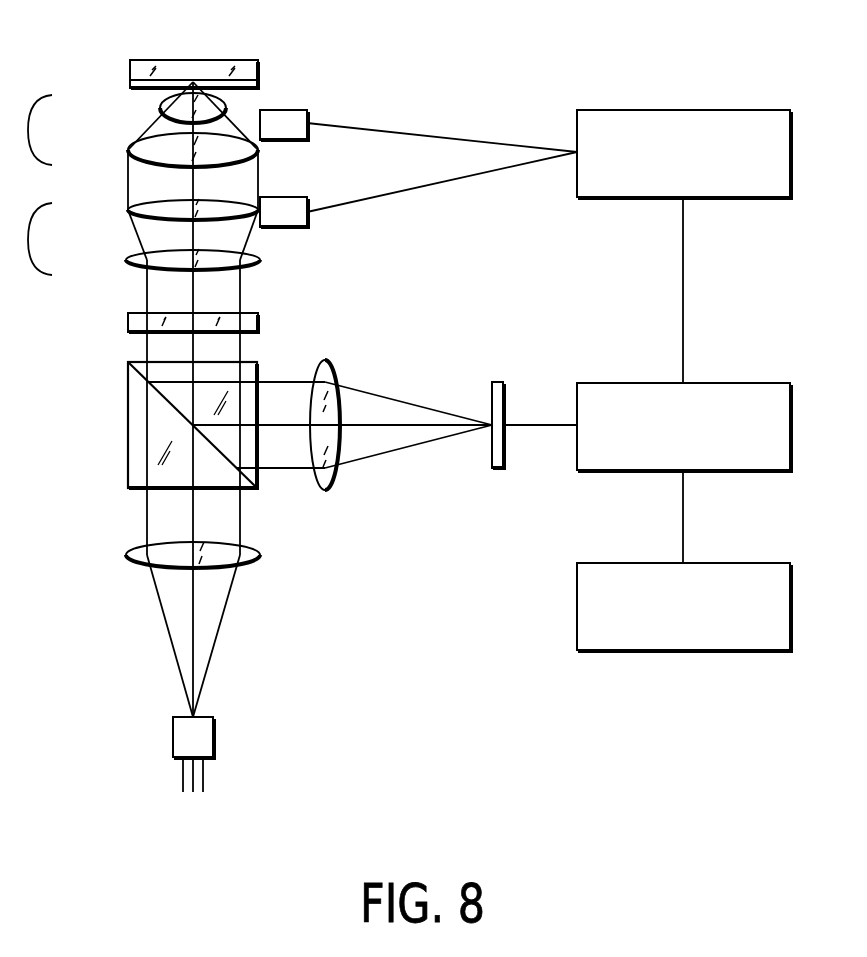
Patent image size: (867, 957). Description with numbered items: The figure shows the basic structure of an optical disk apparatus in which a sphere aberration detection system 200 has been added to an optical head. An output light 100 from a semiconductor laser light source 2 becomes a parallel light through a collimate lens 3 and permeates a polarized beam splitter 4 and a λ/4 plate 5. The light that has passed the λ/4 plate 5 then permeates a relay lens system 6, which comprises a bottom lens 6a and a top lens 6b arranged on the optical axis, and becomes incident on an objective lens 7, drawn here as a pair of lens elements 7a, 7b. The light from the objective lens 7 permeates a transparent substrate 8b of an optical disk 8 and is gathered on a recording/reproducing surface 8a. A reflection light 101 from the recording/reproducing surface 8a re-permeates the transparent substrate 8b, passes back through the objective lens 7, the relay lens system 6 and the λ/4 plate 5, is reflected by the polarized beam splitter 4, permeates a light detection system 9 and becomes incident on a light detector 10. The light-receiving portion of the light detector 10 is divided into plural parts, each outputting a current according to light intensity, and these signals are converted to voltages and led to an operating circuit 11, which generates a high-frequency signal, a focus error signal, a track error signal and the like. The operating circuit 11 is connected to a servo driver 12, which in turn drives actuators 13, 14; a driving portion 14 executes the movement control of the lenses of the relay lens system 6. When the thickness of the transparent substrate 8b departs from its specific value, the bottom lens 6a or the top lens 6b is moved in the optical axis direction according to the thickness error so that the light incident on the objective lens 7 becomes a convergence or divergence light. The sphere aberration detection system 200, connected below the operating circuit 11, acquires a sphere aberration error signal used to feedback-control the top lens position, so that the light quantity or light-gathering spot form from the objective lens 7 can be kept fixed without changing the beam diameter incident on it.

The semiconductor laser light source 2 is at (173, 739).
The collimate lens 3 is at (126, 555).
The polarized beam splitter 4 is at (128, 410).
The λ/4 plate 5 is at (128, 323).
The relay lens system 6 is at (134, 237).
The bottom lens 6a is at (126, 260).
The top lens 6b is at (128, 209).
The objective lens 7 is at (133, 130).
The objective lens element 7a is at (128, 150).
The objective lens element 7b is at (160, 108).
The optical disk 8 is at (258, 65).
The recording/reproducing surface 8a is at (130, 62).
The transparent substrate 8b is at (130, 81).
The light detection system 9 is at (326, 360).
The light detector 10 is at (498, 382).
The operating circuit 11 is at (614, 383).
The servo driver 12 is at (612, 110).
The actuator 13 is at (296, 110).
The driving portion 14 is at (296, 197).
The output light 100 is at (206, 672).
The reflection light 101 is at (297, 471).
The sphere aberration detection system 200 is at (614, 563).